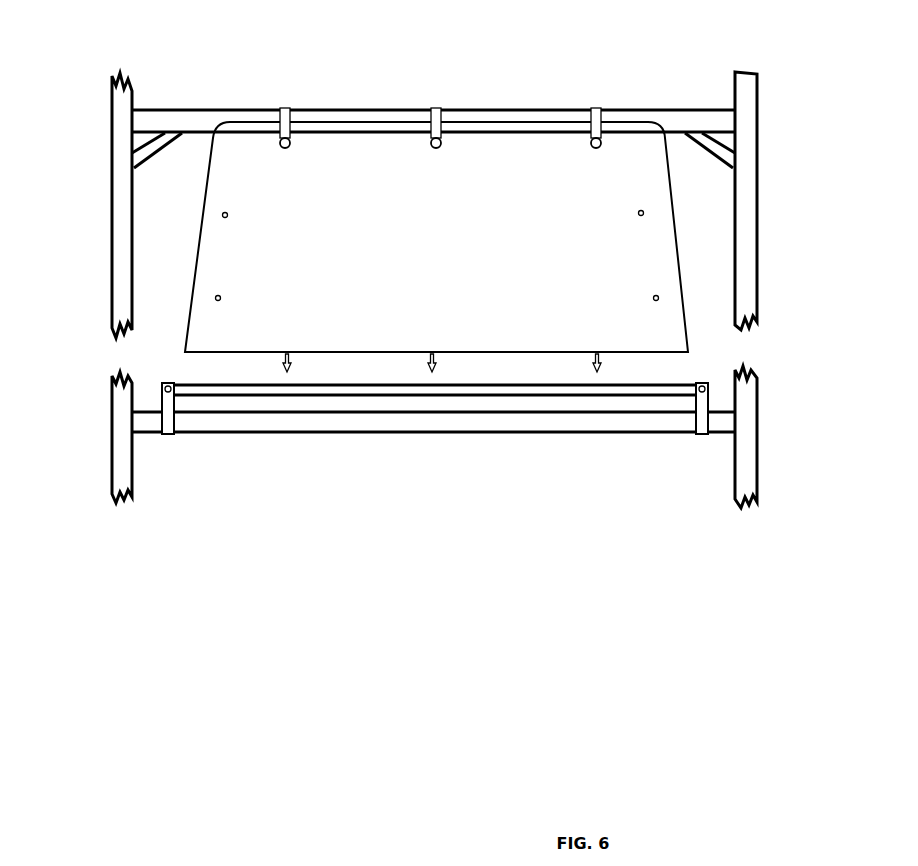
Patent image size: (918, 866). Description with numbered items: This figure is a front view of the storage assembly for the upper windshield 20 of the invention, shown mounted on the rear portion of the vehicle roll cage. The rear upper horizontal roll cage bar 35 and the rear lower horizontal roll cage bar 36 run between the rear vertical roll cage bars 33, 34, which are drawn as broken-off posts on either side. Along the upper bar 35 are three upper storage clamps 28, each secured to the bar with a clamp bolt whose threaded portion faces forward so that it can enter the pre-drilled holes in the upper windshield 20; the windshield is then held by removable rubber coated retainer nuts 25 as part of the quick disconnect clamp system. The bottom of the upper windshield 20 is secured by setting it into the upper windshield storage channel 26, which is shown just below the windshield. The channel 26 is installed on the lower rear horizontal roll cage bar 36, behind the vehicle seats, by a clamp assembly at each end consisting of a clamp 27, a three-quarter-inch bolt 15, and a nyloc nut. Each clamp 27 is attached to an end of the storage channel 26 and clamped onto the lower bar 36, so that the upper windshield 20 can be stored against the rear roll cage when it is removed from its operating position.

The bolt, ¾ inch 15 is at (165, 384).
The upper windshield 20 is at (436, 247).
The rubber coated retainer nut 25 is at (290, 137).
The upper windshield storage channel 26 is at (322, 397).
The clamp, 1⅜" 27 is at (167, 436).
The clamp, 1½" 28 is at (285, 108).
The rear vertical roll cage bar on driver's side 33 is at (750, 233).
The rear vertical roll cage bar on driver's side 34 is at (120, 224).
The rear upper horizontal roll cage bar 35 is at (668, 120).
The rear lower horizontal roll cage bar 36 is at (503, 434).